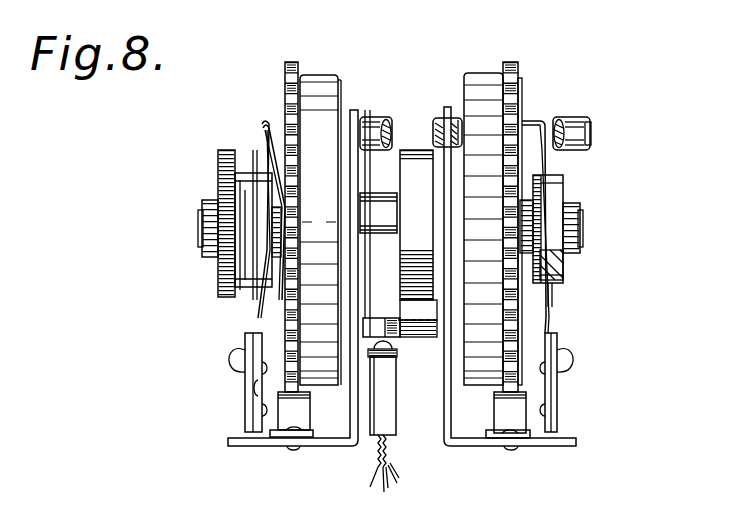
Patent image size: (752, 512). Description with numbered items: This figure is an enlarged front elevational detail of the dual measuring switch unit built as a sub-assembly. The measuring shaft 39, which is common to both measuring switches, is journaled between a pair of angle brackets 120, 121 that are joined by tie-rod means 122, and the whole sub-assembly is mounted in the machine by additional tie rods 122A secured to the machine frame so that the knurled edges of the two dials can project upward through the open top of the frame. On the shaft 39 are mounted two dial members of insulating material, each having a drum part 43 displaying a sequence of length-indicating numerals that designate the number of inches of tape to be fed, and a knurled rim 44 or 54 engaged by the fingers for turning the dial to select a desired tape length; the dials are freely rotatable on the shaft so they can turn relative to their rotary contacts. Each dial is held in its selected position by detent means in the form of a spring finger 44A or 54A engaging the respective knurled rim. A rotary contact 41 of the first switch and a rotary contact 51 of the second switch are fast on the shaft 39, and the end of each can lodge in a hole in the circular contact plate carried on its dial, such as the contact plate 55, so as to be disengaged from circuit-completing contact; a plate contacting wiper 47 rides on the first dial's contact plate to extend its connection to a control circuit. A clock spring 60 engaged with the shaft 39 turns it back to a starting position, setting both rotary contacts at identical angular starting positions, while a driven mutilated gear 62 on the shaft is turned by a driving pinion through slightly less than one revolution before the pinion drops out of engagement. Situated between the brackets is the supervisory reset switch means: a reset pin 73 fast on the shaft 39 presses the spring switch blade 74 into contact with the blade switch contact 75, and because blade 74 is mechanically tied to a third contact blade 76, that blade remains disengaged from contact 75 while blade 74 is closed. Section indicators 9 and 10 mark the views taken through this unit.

The section line 9- 9 is at (239, 320).
The section line 10- 10 is at (364, 112).
The driven shaft 39 is at (585, 221).
The rotary contact 41 is at (272, 122).
The drum part 43 is at (314, 75).
The knurled rim portion 44 is at (293, 62).
The spring finger 44A is at (296, 420).
The plate contacting wiper 47 is at (281, 208).
The rotary contact 51 is at (543, 121).
The knurled rim 54 is at (511, 62).
The spring finger 54A is at (505, 418).
The circular contact plate 55 is at (522, 99).
The clock spring 60 is at (410, 186).
The mutilated gear 62 is at (219, 282).
The reset pin 73 is at (381, 349).
The spring switch blade 74 is at (400, 398).
The blade switch contact 75 is at (385, 479).
The third contact blade 76 is at (393, 473).
The angle bracket 120 is at (367, 112).
The angle bracket 121 is at (448, 107).
The tie-rod means 122 is at (377, 118).
The additional tie rods 122A is at (577, 123).